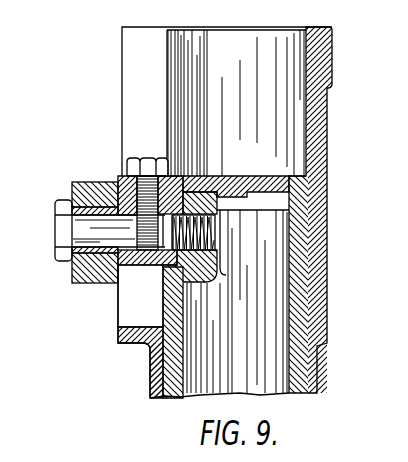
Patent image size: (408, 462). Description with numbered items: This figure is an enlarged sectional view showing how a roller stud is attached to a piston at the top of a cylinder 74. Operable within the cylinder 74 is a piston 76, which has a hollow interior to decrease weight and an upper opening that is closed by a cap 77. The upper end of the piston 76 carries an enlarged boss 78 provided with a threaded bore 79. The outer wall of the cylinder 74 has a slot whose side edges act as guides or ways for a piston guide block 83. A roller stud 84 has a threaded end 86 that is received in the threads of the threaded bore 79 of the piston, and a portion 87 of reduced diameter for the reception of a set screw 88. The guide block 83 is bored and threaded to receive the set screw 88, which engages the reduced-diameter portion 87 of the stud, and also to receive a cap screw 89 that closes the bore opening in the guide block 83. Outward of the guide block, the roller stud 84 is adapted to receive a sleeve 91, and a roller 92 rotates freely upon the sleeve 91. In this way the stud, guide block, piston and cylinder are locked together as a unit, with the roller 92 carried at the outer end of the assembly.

The cylinder 74 is at (314, 280).
The piston 76 is at (172, 308).
The cap 77 is at (239, 187).
The enlarged boss 78 is at (226, 247).
The threaded bore 79 is at (218, 211).
The piston guide block 83 is at (168, 190).
The roller stud 84 is at (73, 239).
The threaded end 86 is at (206, 193).
The portion of reduced diameter 87 is at (148, 242).
The set screw 88 is at (143, 207).
The cap screw 89 is at (147, 158).
The sleeve 91 is at (102, 254).
The roller 92 is at (72, 283).